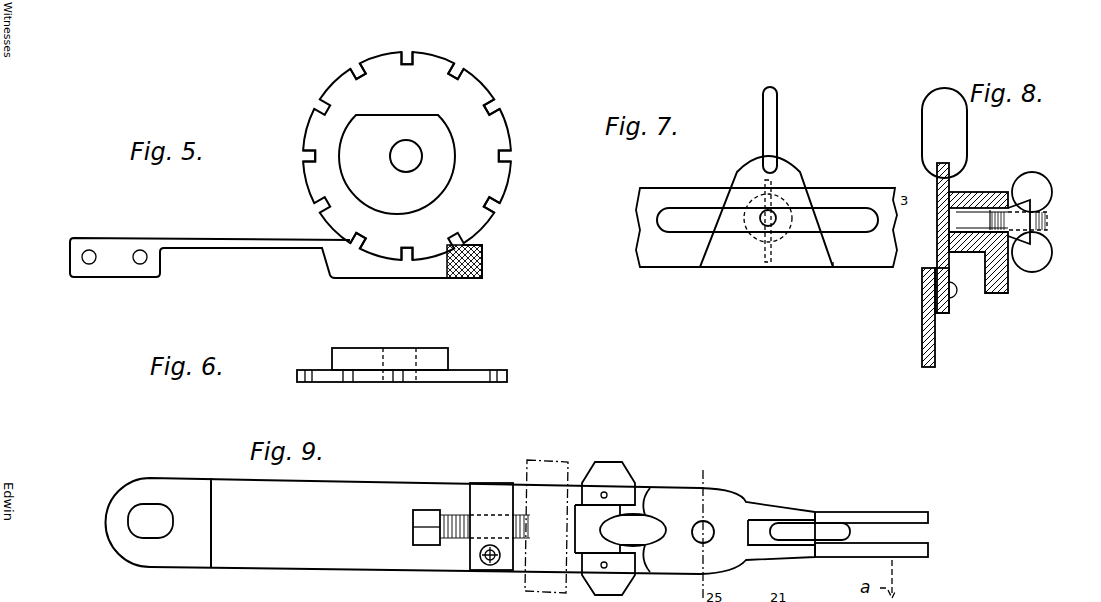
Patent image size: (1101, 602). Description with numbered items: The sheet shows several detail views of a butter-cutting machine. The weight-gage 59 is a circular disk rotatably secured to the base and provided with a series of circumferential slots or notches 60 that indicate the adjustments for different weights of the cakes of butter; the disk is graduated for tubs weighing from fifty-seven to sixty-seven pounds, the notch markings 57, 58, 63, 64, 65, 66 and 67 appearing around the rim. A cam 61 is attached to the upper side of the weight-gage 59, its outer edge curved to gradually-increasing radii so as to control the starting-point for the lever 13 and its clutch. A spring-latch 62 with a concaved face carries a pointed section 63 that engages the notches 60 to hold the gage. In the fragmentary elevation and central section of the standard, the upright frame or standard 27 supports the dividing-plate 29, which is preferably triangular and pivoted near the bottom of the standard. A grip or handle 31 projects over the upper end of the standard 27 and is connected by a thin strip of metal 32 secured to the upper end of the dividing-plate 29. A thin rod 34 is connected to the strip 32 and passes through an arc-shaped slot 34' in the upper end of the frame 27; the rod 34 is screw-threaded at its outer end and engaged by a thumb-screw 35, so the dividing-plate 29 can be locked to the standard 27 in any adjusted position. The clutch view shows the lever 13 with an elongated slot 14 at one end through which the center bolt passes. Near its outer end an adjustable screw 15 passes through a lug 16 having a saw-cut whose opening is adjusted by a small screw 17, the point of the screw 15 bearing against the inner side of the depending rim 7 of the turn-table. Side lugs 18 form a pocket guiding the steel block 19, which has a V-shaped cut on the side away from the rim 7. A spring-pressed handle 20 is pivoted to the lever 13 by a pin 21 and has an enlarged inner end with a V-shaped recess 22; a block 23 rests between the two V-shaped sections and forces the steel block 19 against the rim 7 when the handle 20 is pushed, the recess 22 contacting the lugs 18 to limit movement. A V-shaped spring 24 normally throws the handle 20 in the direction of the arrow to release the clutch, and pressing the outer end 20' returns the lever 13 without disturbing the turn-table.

In FIG. 9, the depending rim 7 is at (553, 466).
In FIG. 9, the lever 13 is at (403, 526).
In FIG. 9, the elongated slot 14 is at (137, 518).
In FIG. 9, the adjustable screw 15 is at (448, 513).
In FIG. 9, the lug 16 is at (487, 500).
In FIG. 9, the small screw 17 is at (484, 562).
In FIG. 9, the side lugs 18 is at (615, 480).
In FIG. 9, the steel block 19 is at (597, 529).
In FIG. 9, the spring-pressed handle 20 is at (888, 561).
In FIG. 9, the outer end of the lever 20' is at (872, 501).
In FIG. 9, the pin 21 is at (708, 522).
In FIG. 9, the V-shaped recess 22 is at (648, 513).
In FIG. 9, the block 23 is at (633, 530).
In FIG. 9, the V-shaped spring 24 is at (790, 530).
In FIG. 7, the frame or standard 27 is at (643, 244).
In FIG. 8, the frame or standard 27 is at (985, 269).
In FIG. 7, the dividing-plate 29 is at (766, 211).
In FIG. 8, the dividing-plate 29 is at (922, 322).
In FIG. 7, the grip or handle 31 is at (772, 146).
In FIG. 8, the grip or handle 31 is at (958, 141).
In FIG. 8, the thin strip of metal 32 is at (937, 198).
In FIG. 7, the thin rod 34 is at (715, 199).
In FIG. 8, the thin rod 34 is at (1006, 264).
In FIG. 7, the arc-shaped slot 34' is at (858, 209).
In FIG. 8, the arc-shaped slot 34' is at (990, 179).
In FIG. 7, the thumb-screw 35 is at (762, 184).
In FIG. 8, the thumb-screw 35 is at (1040, 202).
In FIG. 5, the notch 57 is at (404, 243).
In FIG. 5, the notch 58 is at (364, 232).
In FIG. 5, the weight-gage 59 is at (470, 222).
In FIG. 6, the weight-gage 59 is at (470, 372).
In FIG. 5, the circumferential slots or notches 60 is at (313, 76).
In FIG. 6, the circumferential slots or notches 60 is at (393, 383).
In FIG. 5, the cam 61 is at (388, 157).
In FIG. 6, the cam 61 is at (358, 350).
In FIG. 5, the spring-latch 62 is at (305, 276).
In FIG. 5, the pointed section 63 is at (440, 298).
In FIG. 5, the notch 64 is at (450, 80).
In FIG. 5, the notch 65 is at (482, 113).
In FIG. 5, the notch 66 is at (495, 157).
In FIG. 5, the notch 67 is at (483, 199).